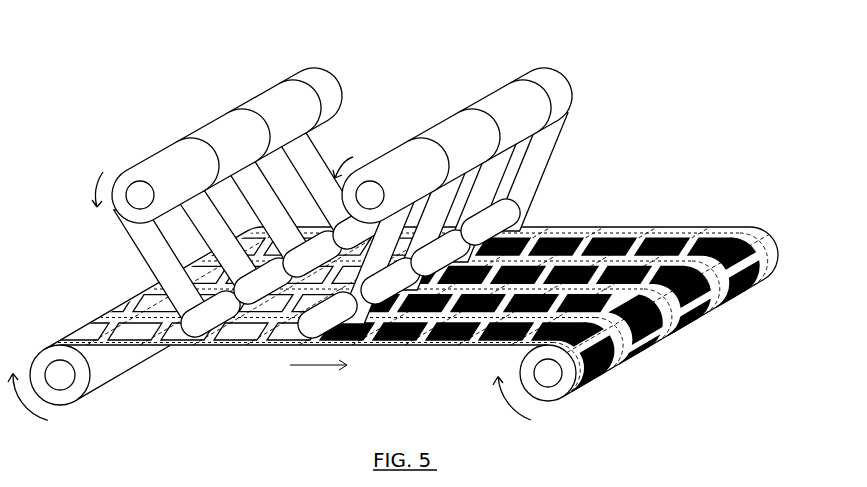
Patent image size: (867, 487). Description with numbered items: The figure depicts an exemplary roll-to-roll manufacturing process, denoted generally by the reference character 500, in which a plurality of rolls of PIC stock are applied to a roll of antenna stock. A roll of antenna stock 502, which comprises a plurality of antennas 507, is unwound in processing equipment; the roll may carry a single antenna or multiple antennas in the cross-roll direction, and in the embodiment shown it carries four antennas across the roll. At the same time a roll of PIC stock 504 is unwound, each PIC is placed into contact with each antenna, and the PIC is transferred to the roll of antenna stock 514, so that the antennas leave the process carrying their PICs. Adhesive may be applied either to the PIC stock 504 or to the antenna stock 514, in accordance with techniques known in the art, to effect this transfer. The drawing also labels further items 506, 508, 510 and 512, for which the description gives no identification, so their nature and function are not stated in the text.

The exemplary manufacturing process 500 is at (408, 236).
The roll of antenna stock 502 is at (74, 404).
The roll of PIC stock 504 is at (287, 80).
The second set of rollers 506 is at (518, 80).
The antennas 507 is at (110, 327).
The conveyor belt 508 is at (556, 229).
The printed pattern cells 510 is at (622, 234).
The separator stripes 512 is at (666, 233).
The roll of antenna stock 514 is at (560, 402).